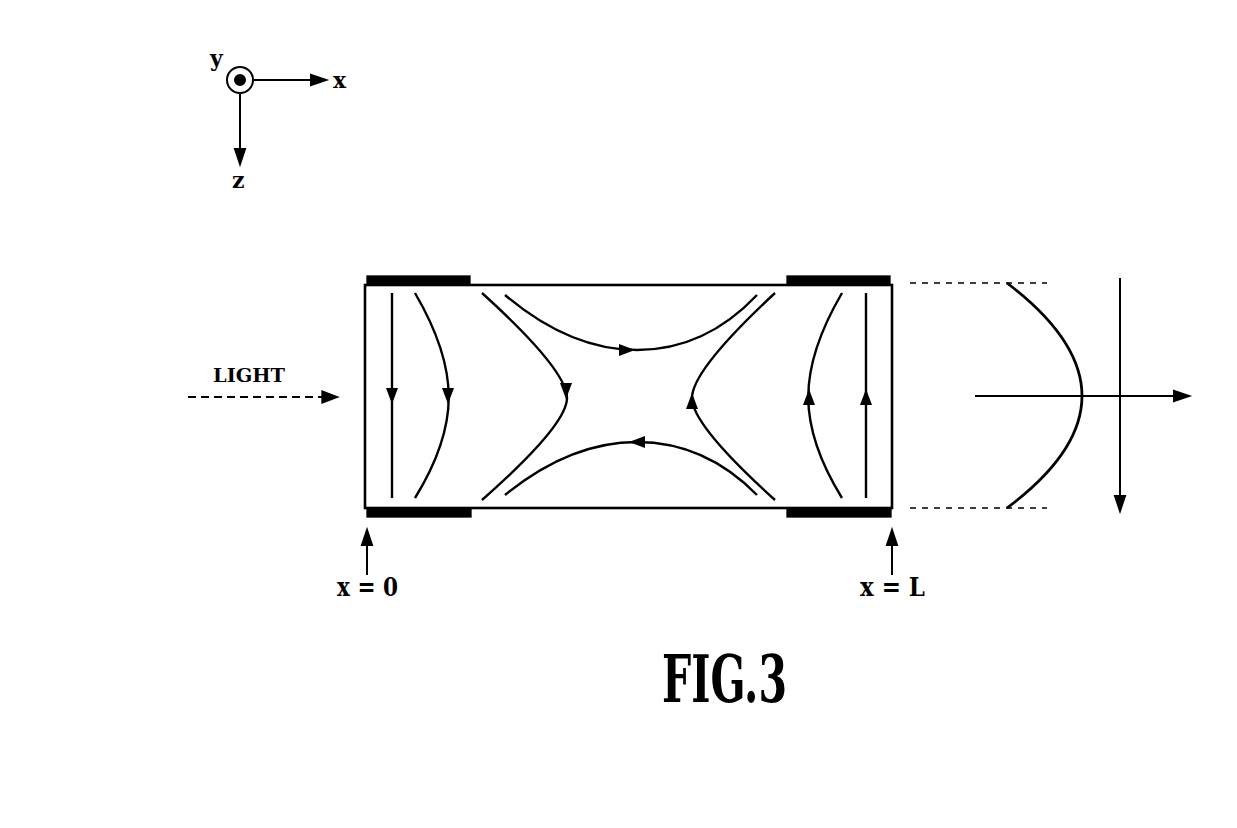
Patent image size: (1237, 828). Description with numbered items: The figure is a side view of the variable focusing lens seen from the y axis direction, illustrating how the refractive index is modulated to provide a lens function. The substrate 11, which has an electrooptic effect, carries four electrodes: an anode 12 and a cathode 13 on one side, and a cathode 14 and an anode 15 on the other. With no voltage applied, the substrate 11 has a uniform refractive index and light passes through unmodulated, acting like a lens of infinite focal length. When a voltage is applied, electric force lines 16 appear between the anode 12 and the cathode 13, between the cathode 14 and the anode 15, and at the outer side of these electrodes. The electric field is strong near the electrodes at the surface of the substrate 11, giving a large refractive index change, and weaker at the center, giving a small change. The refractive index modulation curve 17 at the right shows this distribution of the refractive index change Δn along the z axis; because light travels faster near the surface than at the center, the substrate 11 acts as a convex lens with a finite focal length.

The substrate 11 is at (374, 334).
The anode 12 is at (438, 275).
The cathode 13 is at (437, 517).
The cathode 14 is at (831, 275).
The anode 15 is at (825, 517).
The electric force lines 16 is at (657, 348).
The refractive index modulation curve 17 is at (1047, 472).